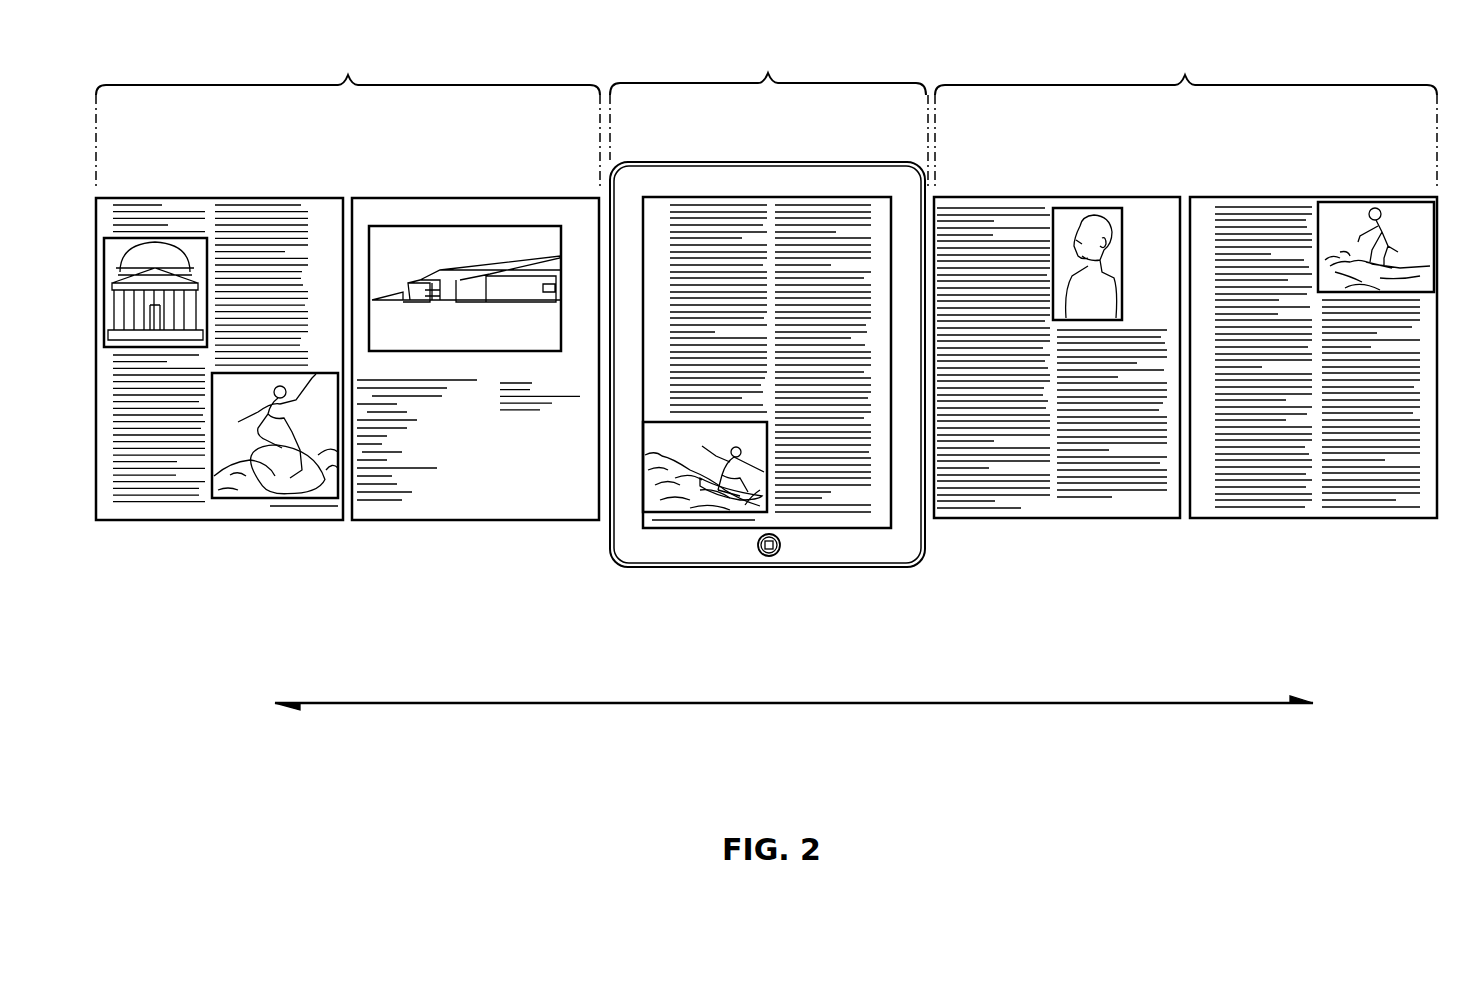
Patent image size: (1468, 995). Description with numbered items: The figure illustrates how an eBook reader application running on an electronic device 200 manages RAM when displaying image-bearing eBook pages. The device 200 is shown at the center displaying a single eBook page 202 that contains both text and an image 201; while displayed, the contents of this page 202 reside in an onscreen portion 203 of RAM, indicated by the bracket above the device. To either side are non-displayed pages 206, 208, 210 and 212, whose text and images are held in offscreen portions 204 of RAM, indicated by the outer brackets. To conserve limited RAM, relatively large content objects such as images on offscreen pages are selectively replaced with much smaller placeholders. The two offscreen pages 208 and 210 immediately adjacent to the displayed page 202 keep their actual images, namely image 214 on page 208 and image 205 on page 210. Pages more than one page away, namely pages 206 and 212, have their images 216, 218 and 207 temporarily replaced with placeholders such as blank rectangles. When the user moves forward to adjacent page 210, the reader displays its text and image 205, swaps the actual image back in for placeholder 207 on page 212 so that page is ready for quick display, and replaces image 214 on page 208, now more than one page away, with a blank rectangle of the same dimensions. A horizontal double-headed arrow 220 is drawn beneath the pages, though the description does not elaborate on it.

The electronic device 200 is at (668, 547).
The image 201 is at (752, 490).
The eBook page 202 is at (770, 218).
The onscreen portion of RAM 203 is at (769, 115).
The offscreen portions of RAM 204 is at (766, 114).
The image 205 is at (1066, 222).
The eBook page 206 is at (150, 506).
The image placeholder 207 is at (1337, 218).
The eBook page 208 is at (435, 505).
The eBook page 210 is at (1110, 505).
The eBook page 212 is at (1290, 497).
The image 214 is at (400, 255).
The image 216 is at (120, 255).
The image 218 is at (253, 487).
The scroll direction arrow 220 is at (795, 700).